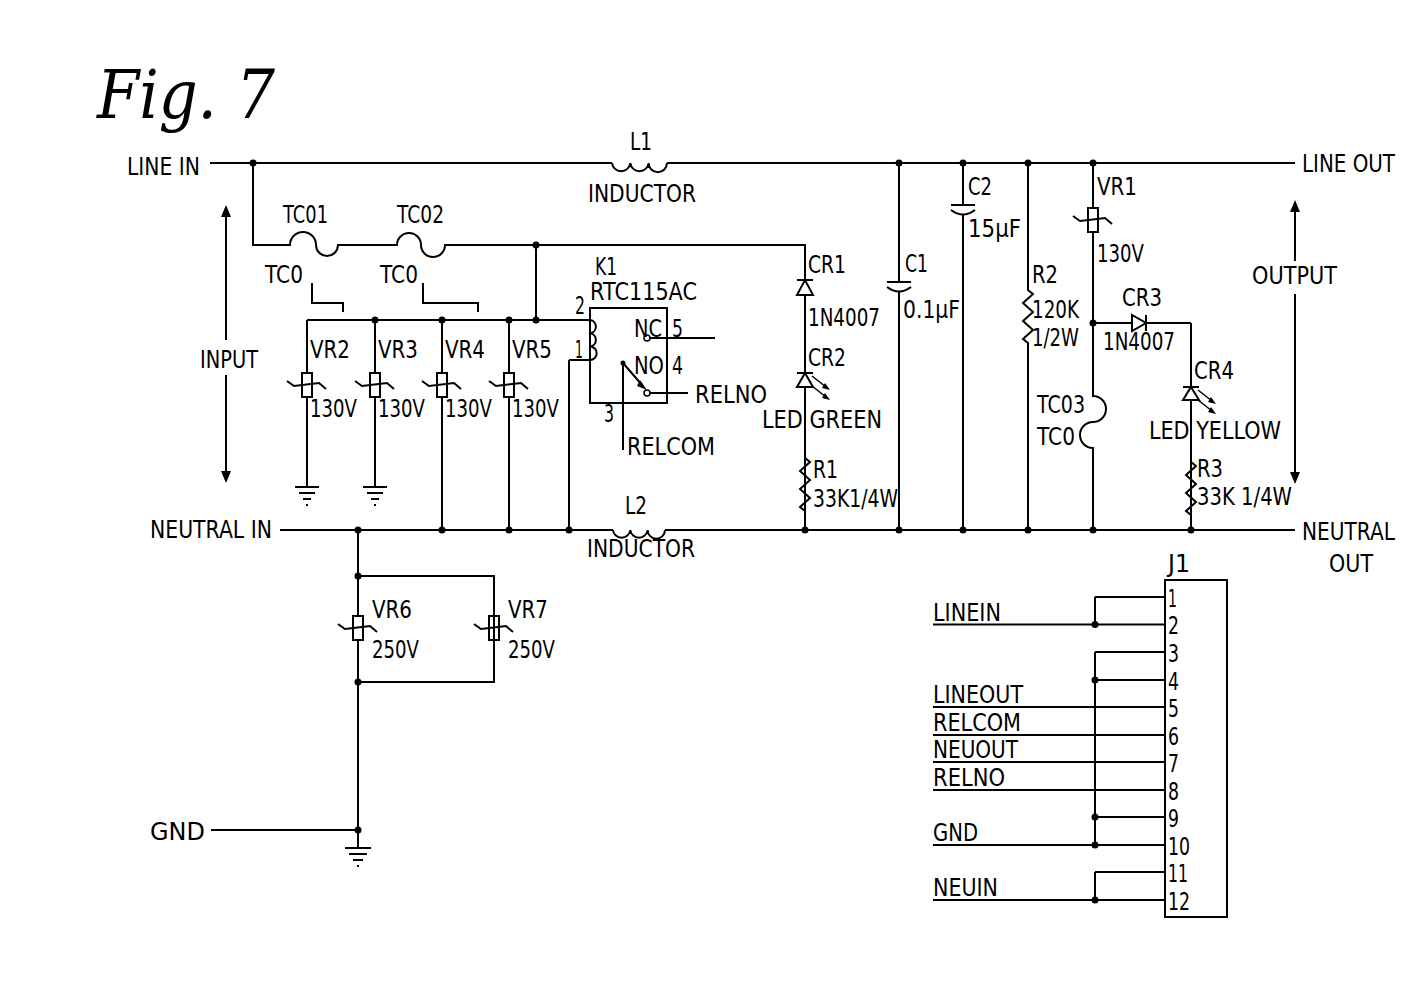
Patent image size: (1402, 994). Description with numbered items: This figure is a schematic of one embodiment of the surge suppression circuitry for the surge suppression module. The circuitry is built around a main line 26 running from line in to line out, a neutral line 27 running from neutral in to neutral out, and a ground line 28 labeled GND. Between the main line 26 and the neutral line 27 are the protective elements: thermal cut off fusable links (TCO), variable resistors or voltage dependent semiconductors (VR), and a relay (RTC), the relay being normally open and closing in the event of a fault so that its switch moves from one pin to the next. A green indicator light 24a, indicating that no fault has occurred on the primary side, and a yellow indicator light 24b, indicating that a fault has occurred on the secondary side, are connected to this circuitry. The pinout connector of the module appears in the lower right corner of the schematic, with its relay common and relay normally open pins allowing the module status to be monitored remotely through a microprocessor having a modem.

The main line 26 is at (778, 163).
The neutral line 27 is at (765, 530).
The green indicator light 24a is at (876, 392).
The yellow indicator light 24b is at (1256, 386).
The ground line 28 is at (289, 830).